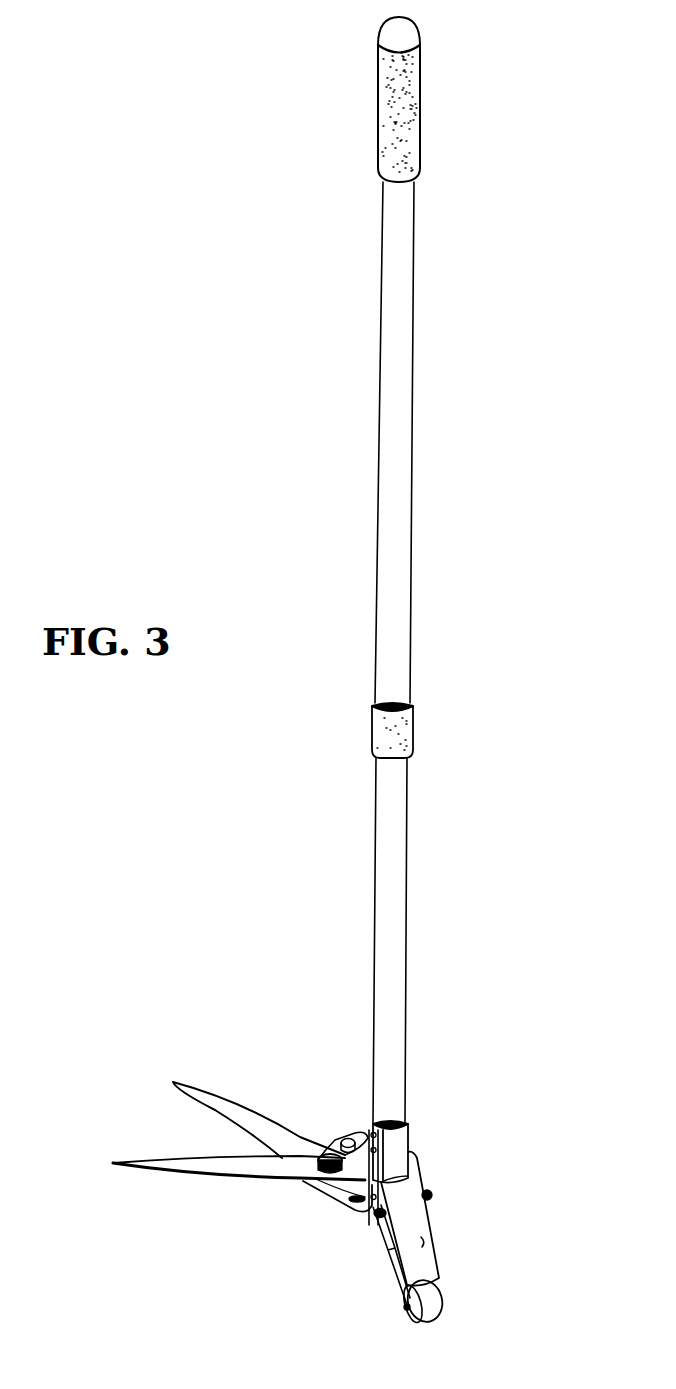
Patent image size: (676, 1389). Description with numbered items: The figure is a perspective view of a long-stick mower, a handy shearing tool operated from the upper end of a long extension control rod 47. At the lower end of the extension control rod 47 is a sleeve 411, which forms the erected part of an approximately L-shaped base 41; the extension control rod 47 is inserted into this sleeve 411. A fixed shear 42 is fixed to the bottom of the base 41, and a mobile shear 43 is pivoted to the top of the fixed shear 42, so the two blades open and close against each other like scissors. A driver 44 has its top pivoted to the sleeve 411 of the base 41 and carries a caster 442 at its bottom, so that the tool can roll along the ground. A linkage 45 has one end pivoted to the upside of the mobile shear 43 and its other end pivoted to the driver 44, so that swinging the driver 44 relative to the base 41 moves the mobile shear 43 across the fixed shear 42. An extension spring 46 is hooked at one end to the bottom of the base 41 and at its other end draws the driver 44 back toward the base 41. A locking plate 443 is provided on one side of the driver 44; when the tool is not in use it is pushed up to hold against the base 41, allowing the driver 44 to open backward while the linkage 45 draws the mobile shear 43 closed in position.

The base 41 is at (340, 1190).
The fixed shear 42 is at (253, 1112).
The mobile shear 43 is at (203, 1168).
The driver 44 is at (423, 1222).
The linkage 45 is at (370, 1135).
The extension spring 46 is at (365, 1210).
The extension control rod 47 is at (385, 858).
The sleeve 411 is at (410, 1132).
The caster 442 is at (442, 1310).
The locking plate 443 is at (383, 1257).